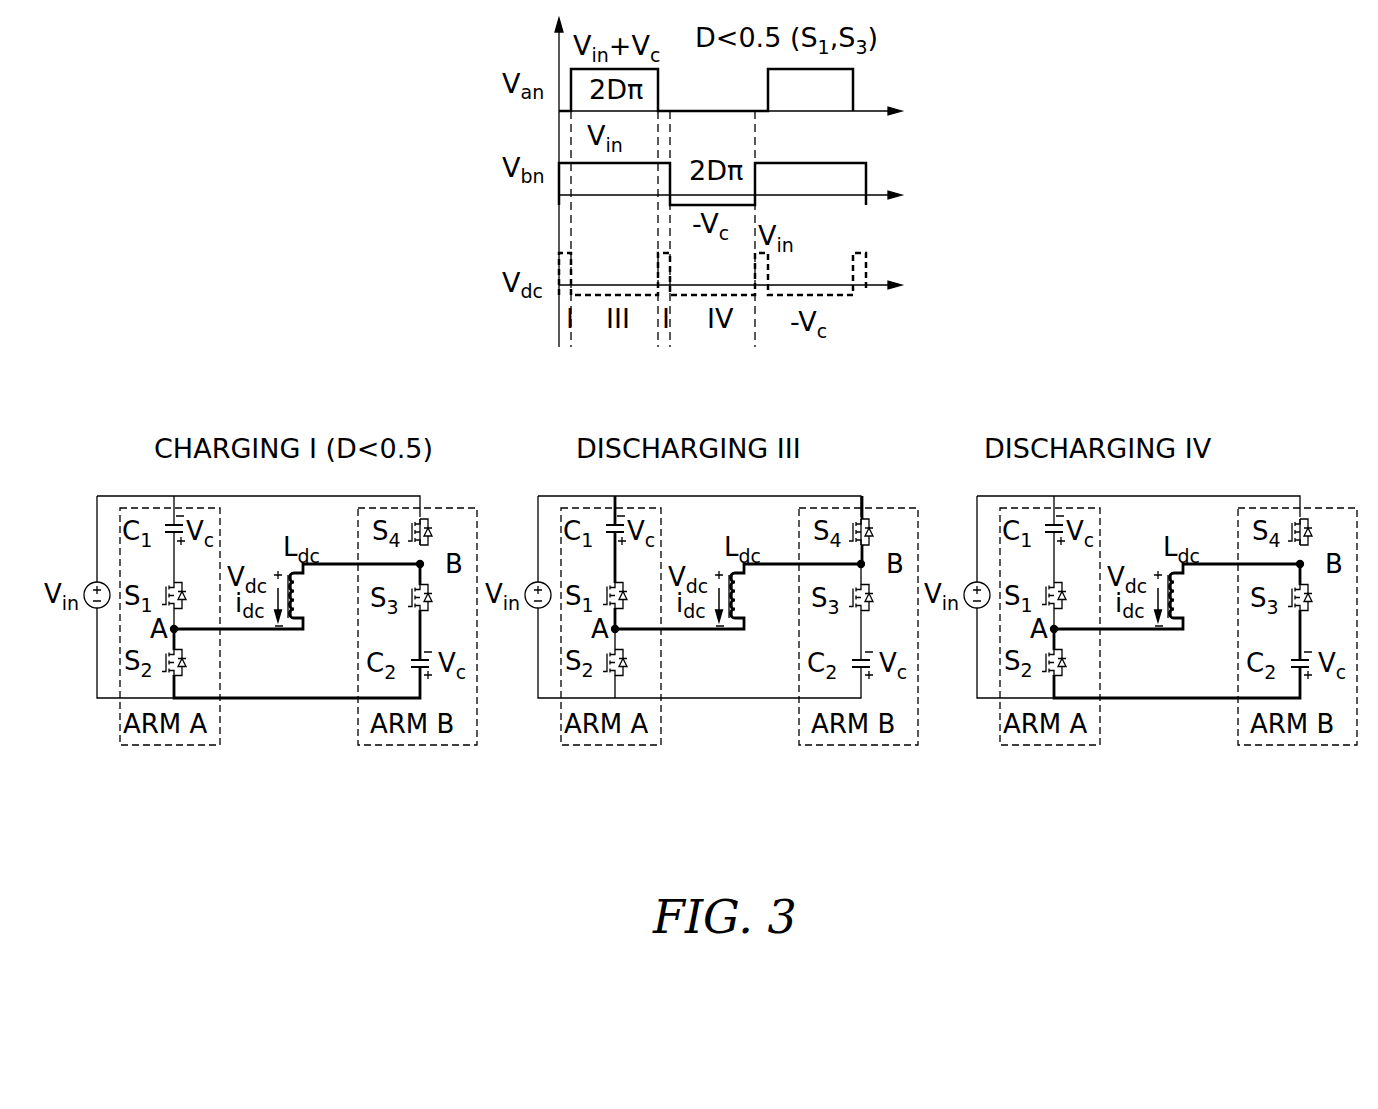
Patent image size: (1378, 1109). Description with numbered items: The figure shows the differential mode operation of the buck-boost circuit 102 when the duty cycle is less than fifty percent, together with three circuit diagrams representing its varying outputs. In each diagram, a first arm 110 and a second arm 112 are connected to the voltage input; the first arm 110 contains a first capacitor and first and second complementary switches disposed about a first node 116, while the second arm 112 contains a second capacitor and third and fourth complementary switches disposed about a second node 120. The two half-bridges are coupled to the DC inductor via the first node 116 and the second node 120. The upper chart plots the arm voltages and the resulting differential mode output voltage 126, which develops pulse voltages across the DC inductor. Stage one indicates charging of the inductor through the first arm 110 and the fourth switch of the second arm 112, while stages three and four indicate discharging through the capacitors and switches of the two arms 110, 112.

The buck-boost circuit 102 is at (272, 800).
The first arm 110 is at (165, 747).
The second arm 112 is at (427, 747).
The first node 116 is at (176, 631).
The second node 120 is at (420, 564).
The differential mode output voltage 126 is at (867, 270).